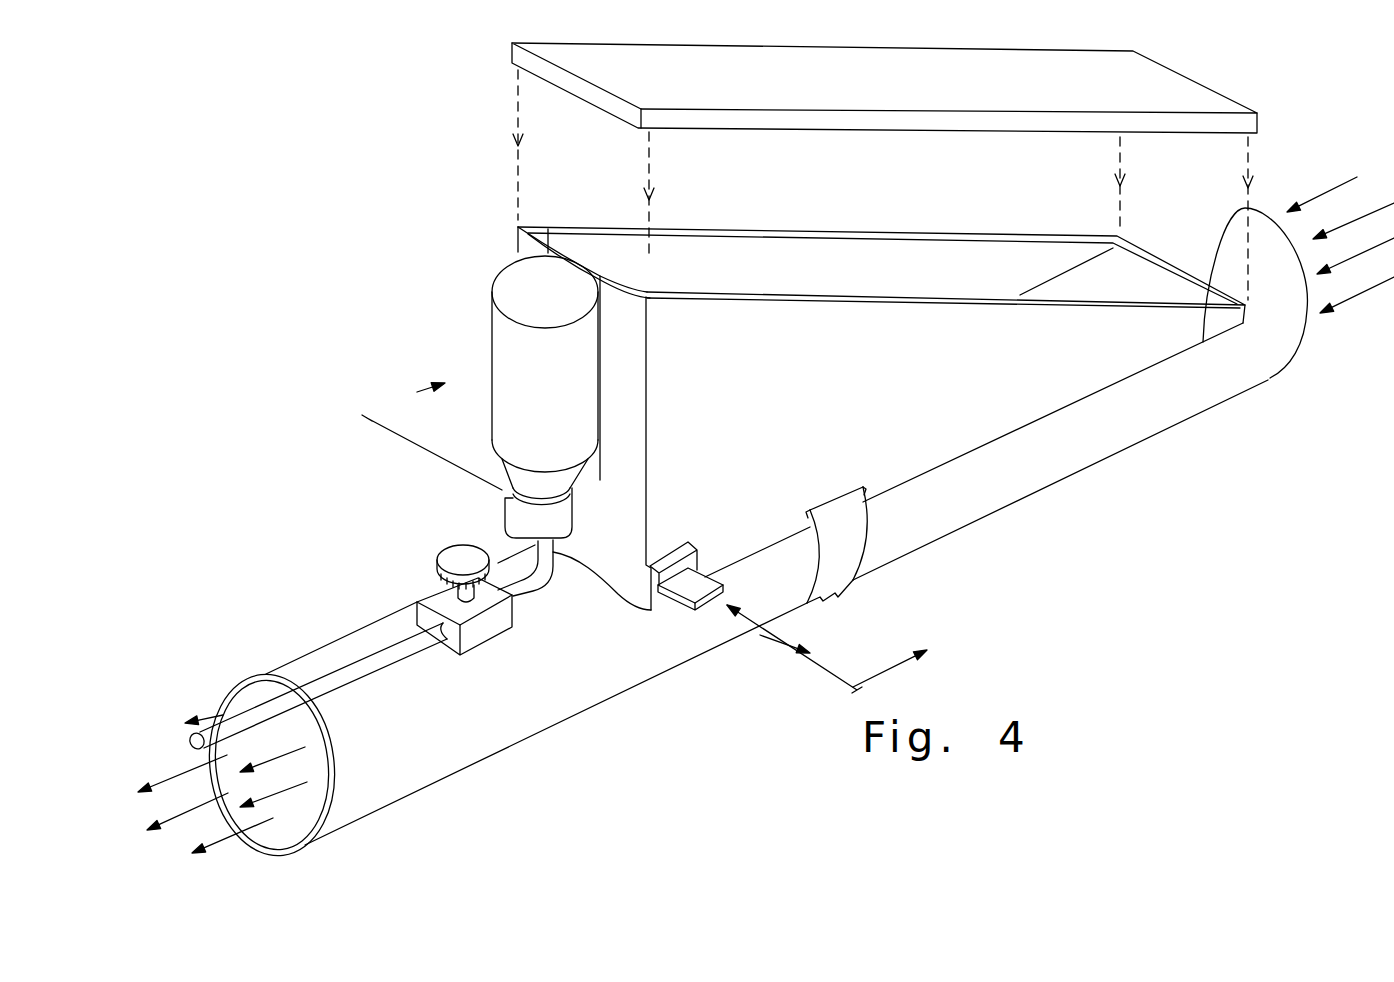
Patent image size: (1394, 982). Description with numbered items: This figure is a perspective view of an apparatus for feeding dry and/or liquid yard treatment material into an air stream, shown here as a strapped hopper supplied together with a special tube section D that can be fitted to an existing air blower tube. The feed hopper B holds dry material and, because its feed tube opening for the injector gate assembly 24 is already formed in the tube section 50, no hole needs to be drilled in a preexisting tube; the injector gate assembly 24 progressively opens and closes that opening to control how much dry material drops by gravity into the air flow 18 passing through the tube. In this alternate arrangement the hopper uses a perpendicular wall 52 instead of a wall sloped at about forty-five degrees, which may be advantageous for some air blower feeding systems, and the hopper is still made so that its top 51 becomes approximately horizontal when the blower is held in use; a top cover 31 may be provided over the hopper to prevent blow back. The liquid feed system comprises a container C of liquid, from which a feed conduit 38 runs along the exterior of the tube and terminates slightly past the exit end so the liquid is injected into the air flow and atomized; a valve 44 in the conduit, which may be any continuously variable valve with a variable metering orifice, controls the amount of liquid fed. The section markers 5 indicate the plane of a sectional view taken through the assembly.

The top cover 31 is at (512, 52).
The top 51 is at (857, 233).
The perpendicular wall 52 is at (624, 377).
The container C is at (492, 332).
The valve 44 is at (437, 550).
The feed conduit 38 is at (370, 657).
The tube section 50 is at (522, 700).
The air flow 18 is at (210, 827).
The injector gate assembly 24 is at (663, 610).
The feed hopper B is at (1077, 415).
The special tube section D is at (978, 517).
The section line 5- 5 is at (644, 525).